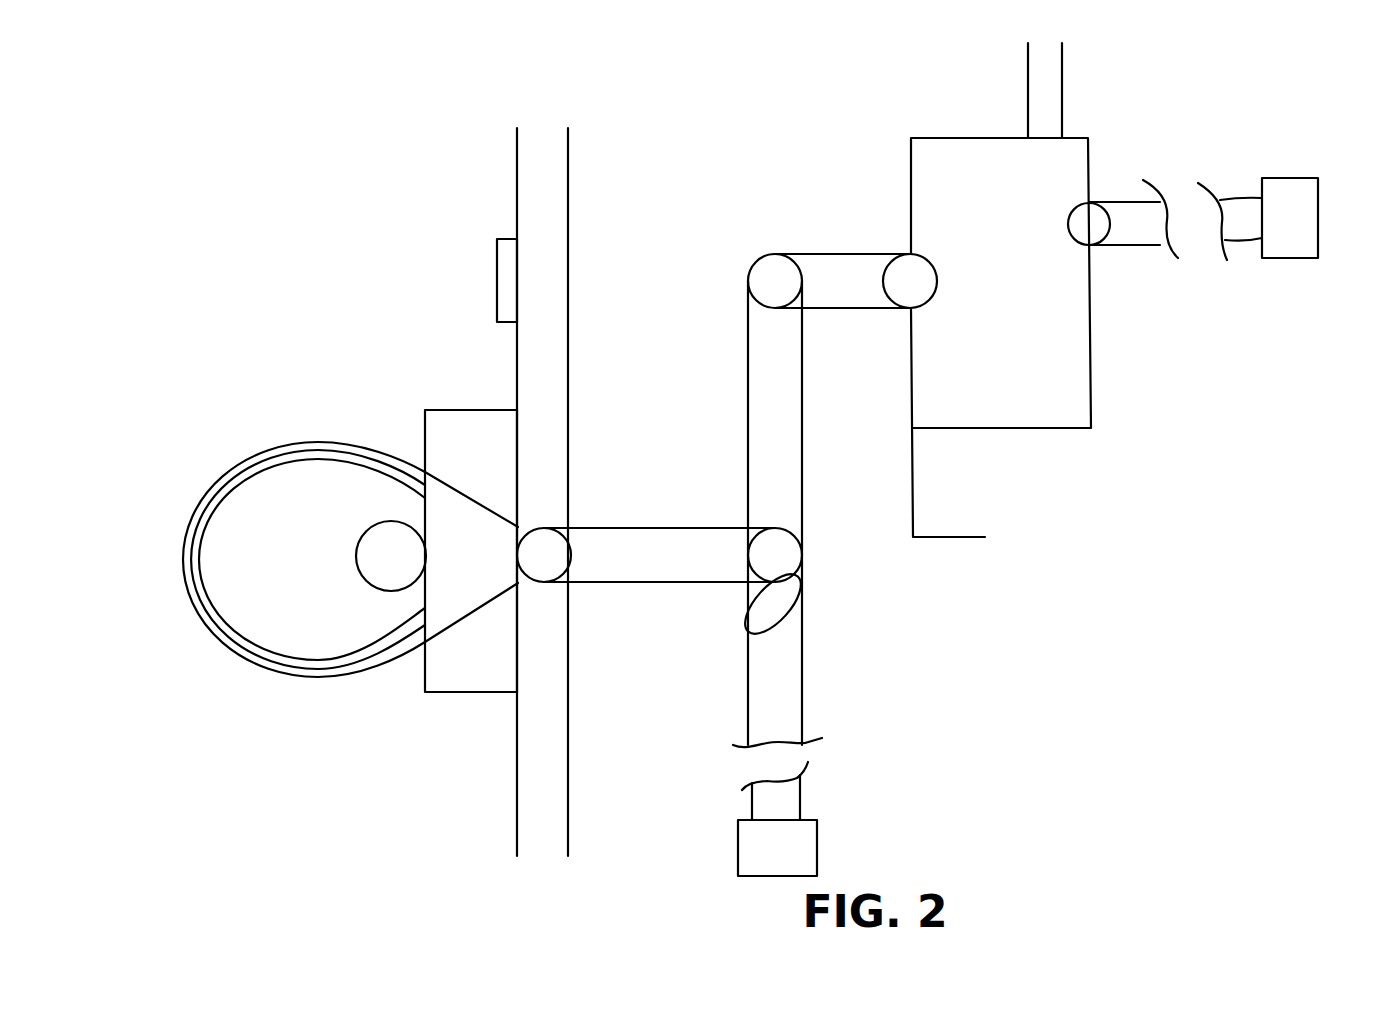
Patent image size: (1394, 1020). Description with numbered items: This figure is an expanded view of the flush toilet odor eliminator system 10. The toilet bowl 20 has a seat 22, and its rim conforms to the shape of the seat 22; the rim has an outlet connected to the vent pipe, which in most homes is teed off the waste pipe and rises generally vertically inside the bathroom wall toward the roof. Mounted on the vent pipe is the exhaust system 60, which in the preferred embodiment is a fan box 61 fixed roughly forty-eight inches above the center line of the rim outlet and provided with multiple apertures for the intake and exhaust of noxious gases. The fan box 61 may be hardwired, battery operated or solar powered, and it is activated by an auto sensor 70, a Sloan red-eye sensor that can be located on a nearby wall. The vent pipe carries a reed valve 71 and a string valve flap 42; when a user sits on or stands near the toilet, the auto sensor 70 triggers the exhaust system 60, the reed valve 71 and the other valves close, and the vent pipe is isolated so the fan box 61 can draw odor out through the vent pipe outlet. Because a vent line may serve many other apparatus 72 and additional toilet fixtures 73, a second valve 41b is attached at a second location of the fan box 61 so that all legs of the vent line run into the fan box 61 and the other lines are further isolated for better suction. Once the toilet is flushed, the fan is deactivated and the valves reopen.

The flush toilet odor eliminator system 10 is at (326, 290).
The toilet bowl 20 is at (268, 401).
The seat 22 is at (312, 634).
The second valve 41b is at (1080, 204).
The string valve flap 42 is at (812, 533).
The exhaust system 60 is at (864, 202).
The fan box 61 is at (1112, 297).
The auto sensor 70 is at (497, 275).
The reed valve 71 is at (789, 645).
The apparatus 72 is at (1285, 278).
The additional toilet fixture 73 is at (716, 842).